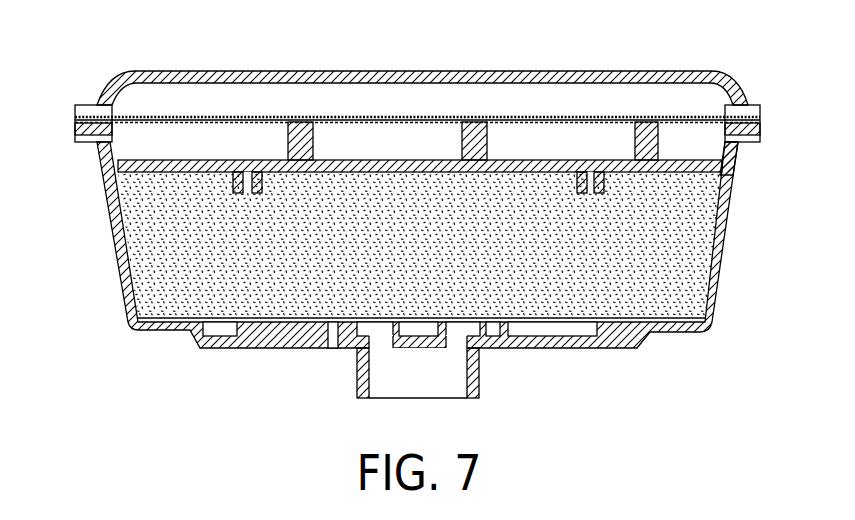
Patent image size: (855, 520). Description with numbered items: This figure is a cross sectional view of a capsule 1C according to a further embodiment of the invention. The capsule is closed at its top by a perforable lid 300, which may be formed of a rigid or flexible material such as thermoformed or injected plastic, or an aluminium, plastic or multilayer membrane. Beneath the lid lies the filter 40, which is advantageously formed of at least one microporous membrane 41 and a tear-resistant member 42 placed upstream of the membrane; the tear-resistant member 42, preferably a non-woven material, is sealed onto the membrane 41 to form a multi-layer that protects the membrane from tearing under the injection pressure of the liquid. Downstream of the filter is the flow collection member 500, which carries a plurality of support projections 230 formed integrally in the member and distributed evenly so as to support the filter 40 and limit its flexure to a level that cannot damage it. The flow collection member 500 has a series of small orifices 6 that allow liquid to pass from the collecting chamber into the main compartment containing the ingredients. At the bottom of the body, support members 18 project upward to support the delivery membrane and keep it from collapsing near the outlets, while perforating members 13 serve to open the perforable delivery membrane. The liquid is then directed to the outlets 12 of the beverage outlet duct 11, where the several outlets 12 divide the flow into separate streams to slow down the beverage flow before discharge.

The capsule 1C is at (108, 352).
The perforable lid 300 is at (213, 71).
The tear-resistant member 42 is at (718, 110).
The microporous membrane 41 is at (723, 138).
The filter 40 is at (112, 138).
The flow collection member 500 is at (132, 190).
The support projections 230 is at (466, 137).
The orifices 6 is at (590, 176).
The support members 18 is at (332, 335).
The perforating members 13 is at (598, 325).
The outlets 12 is at (380, 348).
The beverage outlet duct 11 is at (382, 388).